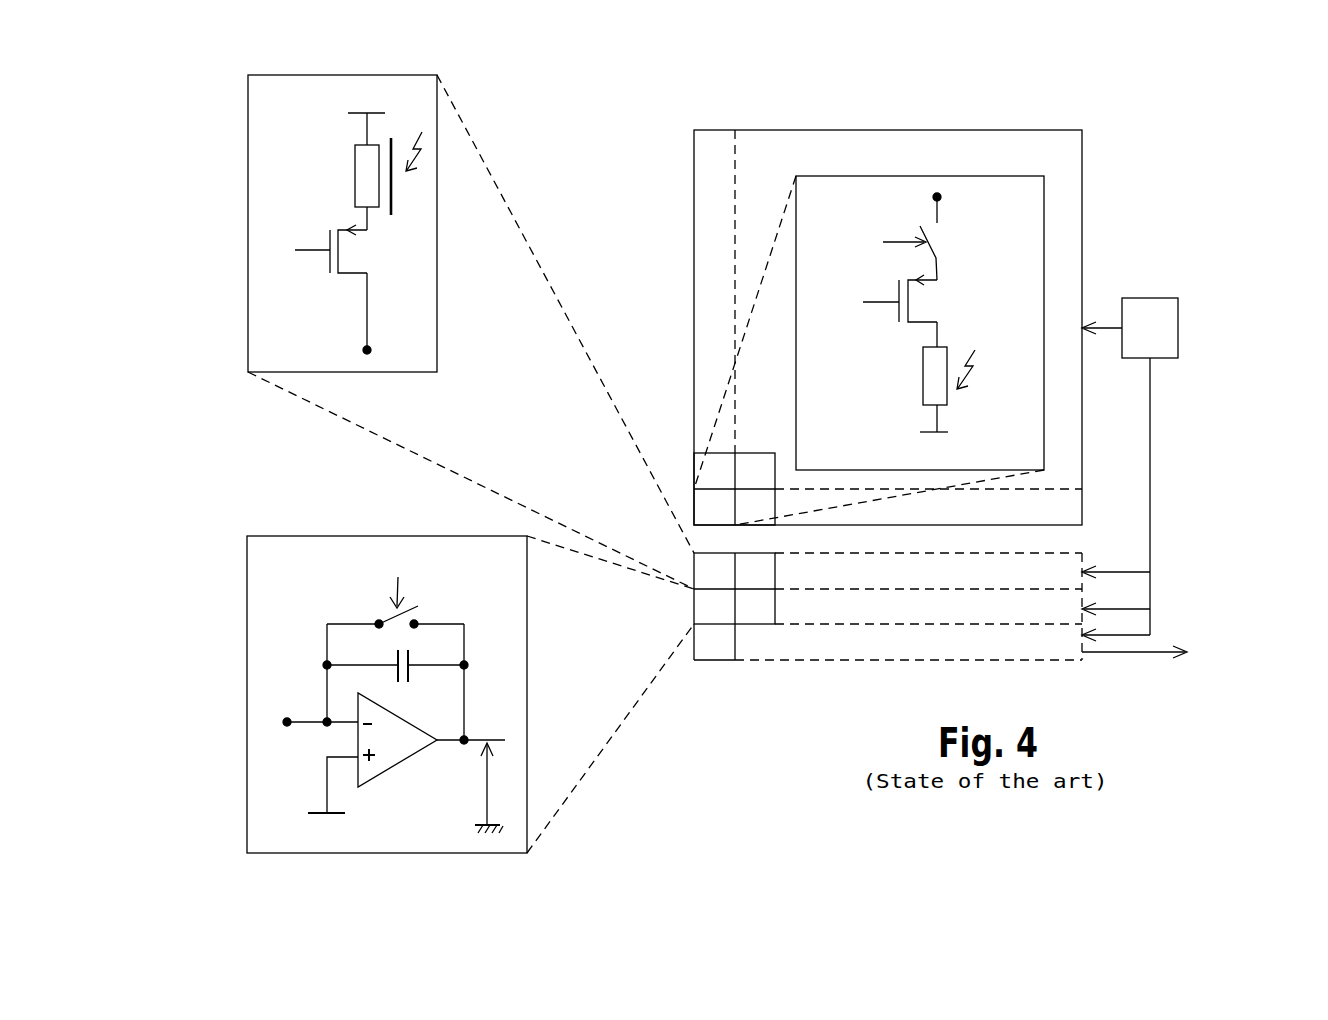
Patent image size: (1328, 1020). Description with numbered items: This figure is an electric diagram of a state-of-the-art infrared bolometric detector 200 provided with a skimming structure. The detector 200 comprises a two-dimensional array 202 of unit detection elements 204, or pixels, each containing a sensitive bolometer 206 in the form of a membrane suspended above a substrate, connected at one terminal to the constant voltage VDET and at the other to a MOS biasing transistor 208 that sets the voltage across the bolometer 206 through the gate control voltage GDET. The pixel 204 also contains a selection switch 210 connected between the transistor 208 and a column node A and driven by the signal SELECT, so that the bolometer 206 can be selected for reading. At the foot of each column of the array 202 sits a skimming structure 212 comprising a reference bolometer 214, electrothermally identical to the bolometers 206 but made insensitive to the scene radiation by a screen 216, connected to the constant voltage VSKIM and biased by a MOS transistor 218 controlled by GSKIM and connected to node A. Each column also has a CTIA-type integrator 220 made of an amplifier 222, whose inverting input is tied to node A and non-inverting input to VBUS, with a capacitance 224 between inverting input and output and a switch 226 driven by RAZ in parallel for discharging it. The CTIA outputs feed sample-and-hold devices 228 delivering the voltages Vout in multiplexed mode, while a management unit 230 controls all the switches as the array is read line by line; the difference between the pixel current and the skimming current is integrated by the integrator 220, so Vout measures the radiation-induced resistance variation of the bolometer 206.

The infrared bolometric detector 200 is at (1072, 118).
The two-dimensional array 202 is at (1082, 258).
The unit detection element 204 is at (898, 334).
The sensitive bolometer 206 is at (923, 366).
The MOS biasing transistor 208 is at (930, 300).
The selection switch 210 is at (932, 232).
The skimming structure 212 is at (408, 303).
The reference bolometer 214 is at (355, 180).
The screen 216 is at (392, 198).
The biasing MOS transistor 218 is at (355, 250).
The integrator 220 is at (411, 704).
The amplifier 222 is at (387, 757).
The capacitance 224 is at (410, 673).
The switch 226 is at (417, 613).
The sample-and-hold device 228 is at (711, 662).
The management unit 230 is at (1170, 330).